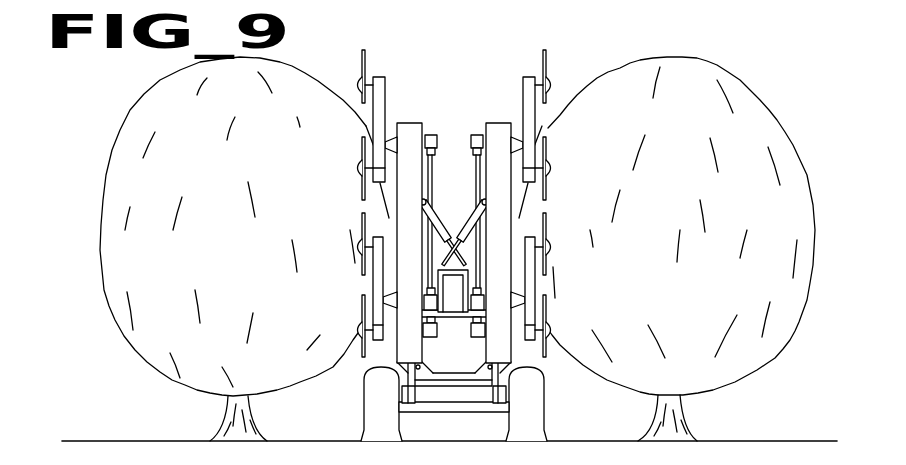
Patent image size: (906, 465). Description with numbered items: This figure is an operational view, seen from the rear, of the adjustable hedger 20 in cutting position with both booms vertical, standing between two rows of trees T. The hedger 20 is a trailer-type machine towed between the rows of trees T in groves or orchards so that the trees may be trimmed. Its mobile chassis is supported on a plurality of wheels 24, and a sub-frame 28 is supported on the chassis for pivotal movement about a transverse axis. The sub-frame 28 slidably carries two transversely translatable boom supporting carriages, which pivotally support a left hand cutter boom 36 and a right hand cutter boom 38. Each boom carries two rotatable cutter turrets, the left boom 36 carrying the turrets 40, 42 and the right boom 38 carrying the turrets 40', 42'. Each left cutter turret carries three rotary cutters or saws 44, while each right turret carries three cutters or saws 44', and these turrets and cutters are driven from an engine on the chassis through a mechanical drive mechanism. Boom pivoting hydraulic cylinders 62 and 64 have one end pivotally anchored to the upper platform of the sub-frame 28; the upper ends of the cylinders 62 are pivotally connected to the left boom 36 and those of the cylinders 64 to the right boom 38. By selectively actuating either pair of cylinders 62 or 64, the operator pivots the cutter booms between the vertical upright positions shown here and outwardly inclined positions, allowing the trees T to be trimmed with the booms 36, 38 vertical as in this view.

The adjustable hedger 20 is at (483, 46).
The wheels 24 is at (365, 419).
The sub-frame 28 is at (512, 378).
The left hand cutter boom 36 is at (411, 121).
The right hand cutter boom 38 is at (484, 126).
The cutter turret 40 is at (403, 117).
The cutter turret 40' is at (507, 117).
The cutter turret 42 is at (350, 288).
The cutter turret 42' is at (565, 288).
The rotary cutters or saws 44 is at (344, 203).
The rotary cutters or saws 44' is at (572, 203).
The boom pivoting hydraulic cylinder 62 is at (425, 207).
The boom pivoting hydraulic cylinder 64 is at (482, 207).
The trees T is at (140, 128).